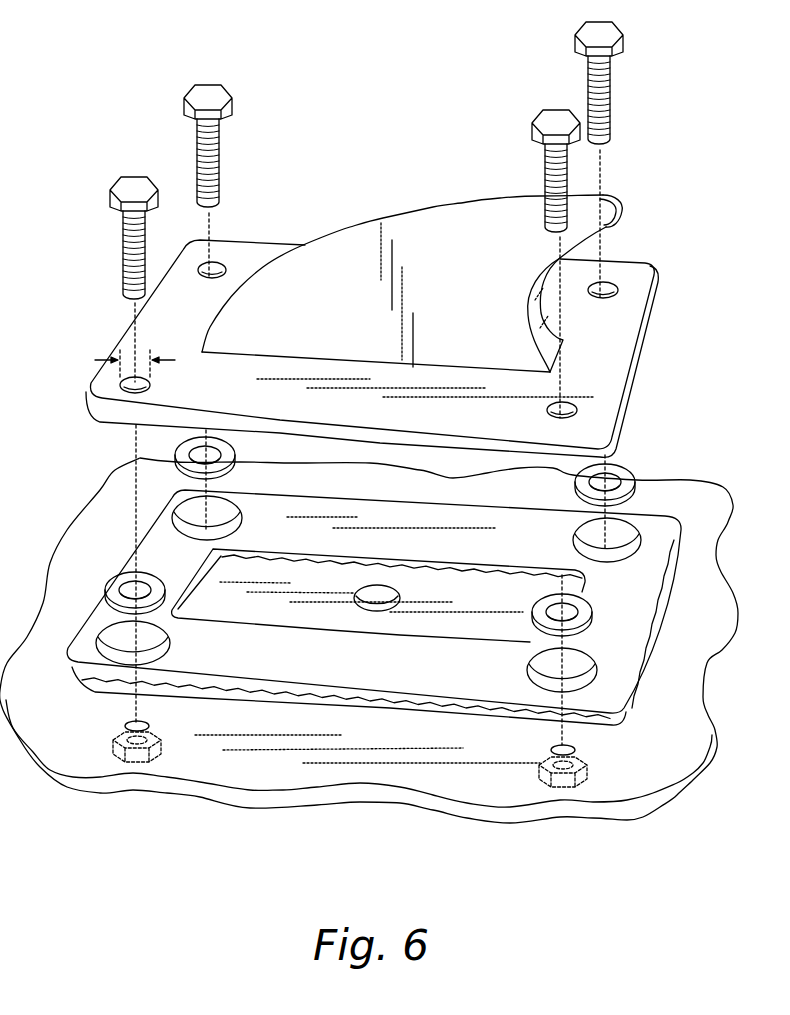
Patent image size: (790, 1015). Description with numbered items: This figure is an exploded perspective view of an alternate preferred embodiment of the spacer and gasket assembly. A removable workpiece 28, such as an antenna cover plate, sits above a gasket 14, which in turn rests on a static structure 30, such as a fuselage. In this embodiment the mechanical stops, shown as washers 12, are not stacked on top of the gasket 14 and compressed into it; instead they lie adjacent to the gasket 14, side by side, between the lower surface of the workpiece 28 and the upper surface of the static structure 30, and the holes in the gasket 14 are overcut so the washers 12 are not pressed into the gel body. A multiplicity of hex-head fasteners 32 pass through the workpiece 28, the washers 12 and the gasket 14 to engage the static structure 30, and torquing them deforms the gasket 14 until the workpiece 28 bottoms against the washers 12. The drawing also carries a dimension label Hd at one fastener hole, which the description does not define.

The washer 12 is at (635, 458).
The gasket 14 is at (665, 648).
The removable workpiece 28 is at (395, 201).
The static structure 30 is at (713, 763).
The fasteners 32 is at (127, 176).
The head diameter dimension Hd is at (130, 345).